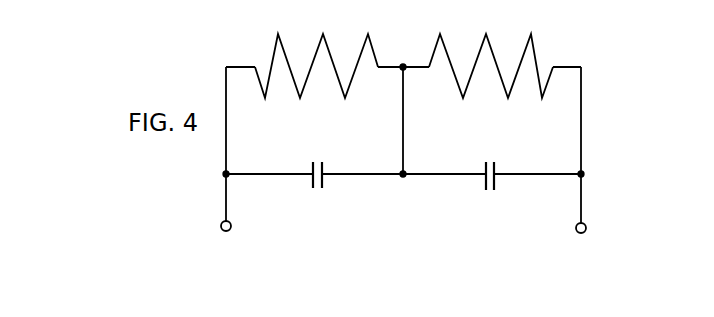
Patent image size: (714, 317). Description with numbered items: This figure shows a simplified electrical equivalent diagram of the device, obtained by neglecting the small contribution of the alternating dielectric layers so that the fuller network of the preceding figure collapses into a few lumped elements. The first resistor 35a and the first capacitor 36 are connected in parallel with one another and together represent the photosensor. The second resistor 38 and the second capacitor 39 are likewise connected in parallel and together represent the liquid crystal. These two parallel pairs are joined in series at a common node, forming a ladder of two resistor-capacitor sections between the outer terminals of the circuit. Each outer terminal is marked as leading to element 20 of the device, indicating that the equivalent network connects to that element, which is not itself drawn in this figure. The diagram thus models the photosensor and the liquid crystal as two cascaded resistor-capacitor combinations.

The resistor 35a is at (318, 45).
The resistor 38 is at (490, 48).
The capacitor 36 is at (326, 166).
The capacitor 39 is at (496, 166).
The terminals to element 20 is at (396, 246).